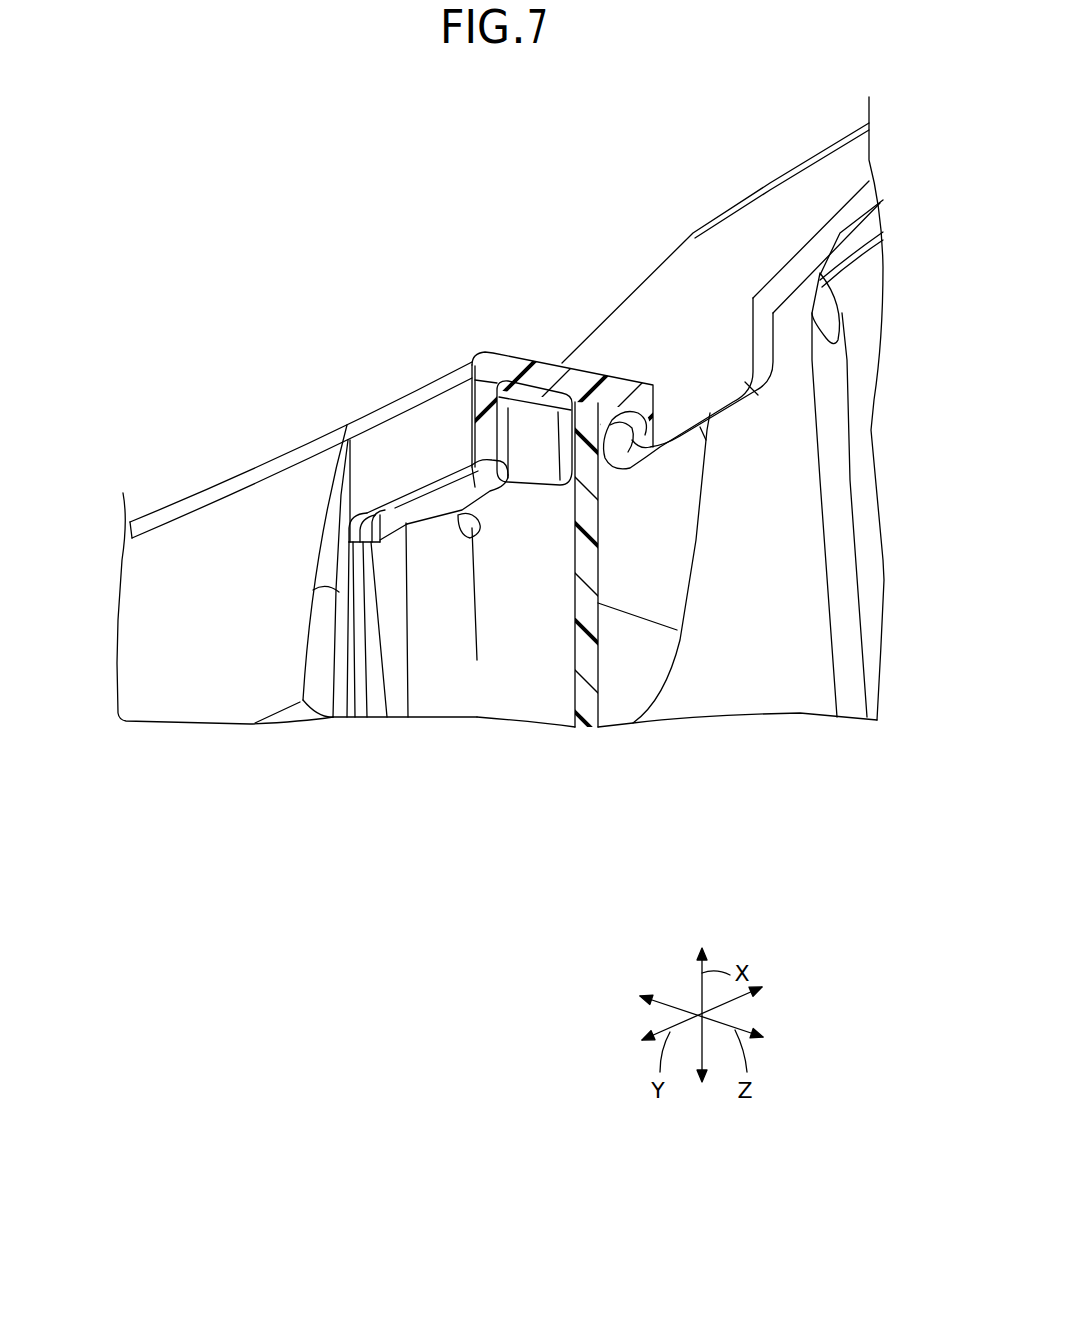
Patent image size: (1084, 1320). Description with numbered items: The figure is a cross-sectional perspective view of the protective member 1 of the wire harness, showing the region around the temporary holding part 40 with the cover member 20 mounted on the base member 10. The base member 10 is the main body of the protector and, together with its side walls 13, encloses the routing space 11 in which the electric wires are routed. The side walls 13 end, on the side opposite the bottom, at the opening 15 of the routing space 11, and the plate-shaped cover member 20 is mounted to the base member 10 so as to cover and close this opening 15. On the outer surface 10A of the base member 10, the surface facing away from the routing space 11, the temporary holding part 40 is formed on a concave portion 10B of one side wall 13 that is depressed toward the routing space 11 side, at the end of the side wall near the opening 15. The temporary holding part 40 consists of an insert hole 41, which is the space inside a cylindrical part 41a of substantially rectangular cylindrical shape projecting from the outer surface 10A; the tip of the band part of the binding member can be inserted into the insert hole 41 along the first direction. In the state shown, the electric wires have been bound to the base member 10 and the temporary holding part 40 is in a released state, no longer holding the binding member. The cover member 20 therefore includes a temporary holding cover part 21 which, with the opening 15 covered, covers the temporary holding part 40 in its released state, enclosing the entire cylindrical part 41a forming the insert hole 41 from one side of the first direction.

The protective member 1 is at (340, 203).
The cover member 20 is at (299, 420).
The temporary holding part 40 is at (407, 512).
The insert hole 41 is at (480, 535).
The cylindrical part 41a is at (424, 545).
The base member 10 is at (707, 738).
The outer surface 10A is at (499, 627).
The concave portion 10B is at (512, 691).
The routing space 11 is at (782, 678).
The side wall 13 is at (563, 680).
The opening 15 is at (662, 404).
The temporary holding cover part 21 is at (517, 348).